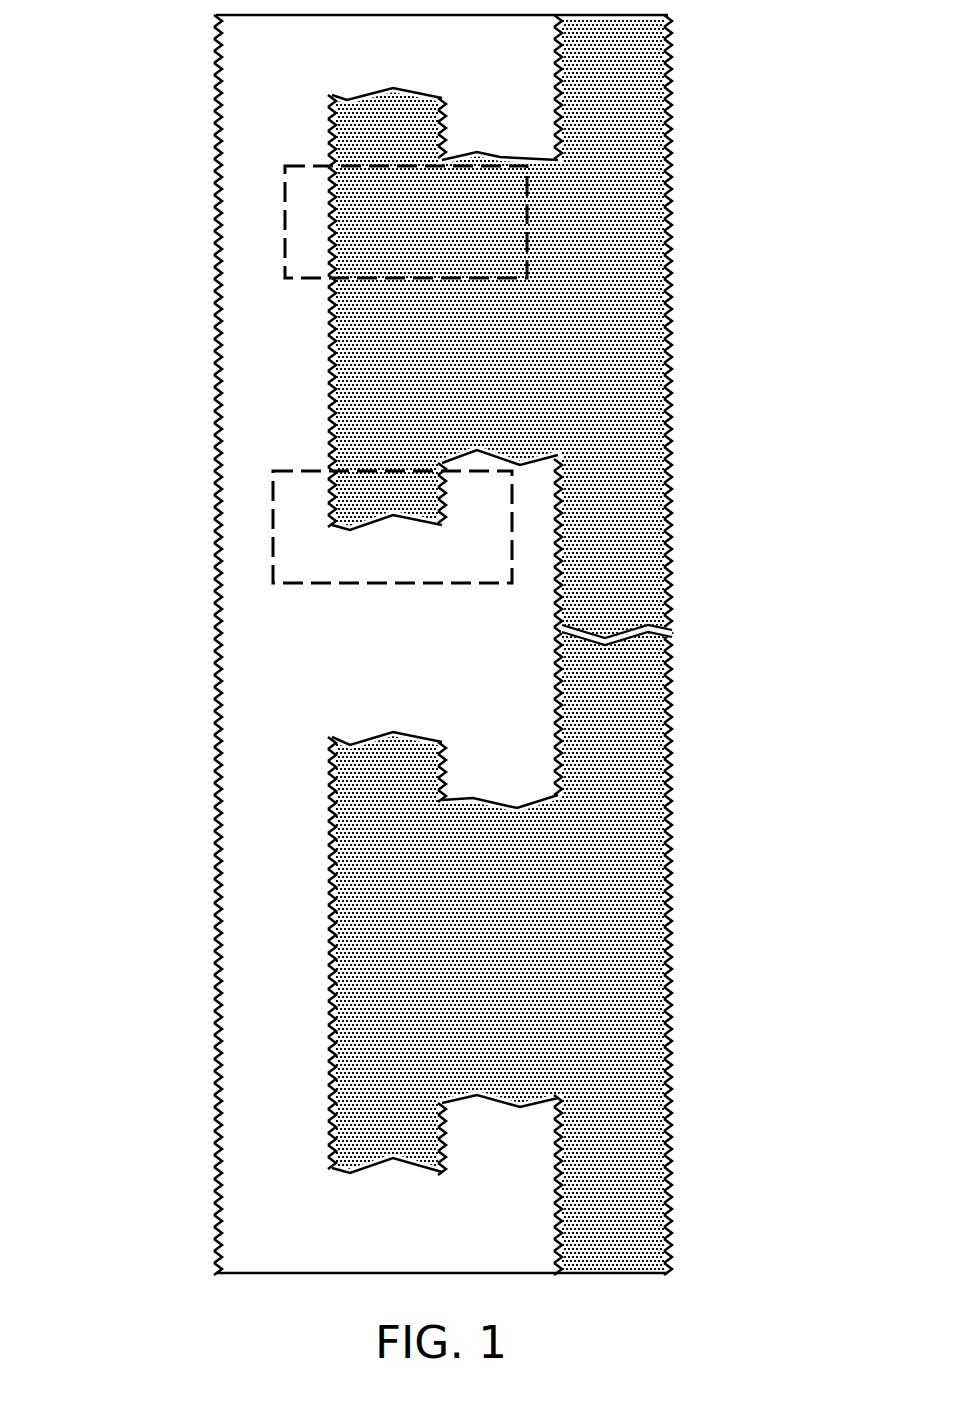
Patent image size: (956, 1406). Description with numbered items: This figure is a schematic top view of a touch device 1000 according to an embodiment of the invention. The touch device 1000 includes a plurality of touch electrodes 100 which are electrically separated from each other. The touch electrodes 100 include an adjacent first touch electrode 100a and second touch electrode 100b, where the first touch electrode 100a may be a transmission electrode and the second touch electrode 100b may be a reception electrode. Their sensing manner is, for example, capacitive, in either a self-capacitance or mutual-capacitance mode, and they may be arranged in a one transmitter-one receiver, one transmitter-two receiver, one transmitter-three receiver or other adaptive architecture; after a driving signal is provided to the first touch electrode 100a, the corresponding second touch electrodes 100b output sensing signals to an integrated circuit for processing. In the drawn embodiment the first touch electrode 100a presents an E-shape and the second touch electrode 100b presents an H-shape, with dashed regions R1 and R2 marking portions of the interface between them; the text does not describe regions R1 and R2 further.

The touch device 1000 is at (434, 671).
The touch electrodes 100 is at (434, 645).
The first touch electrode 100a is at (268, 680).
The second touch electrode 100b is at (627, 347).
The first region of interest R1 is at (285, 228).
The second region of interest R2 is at (273, 517).